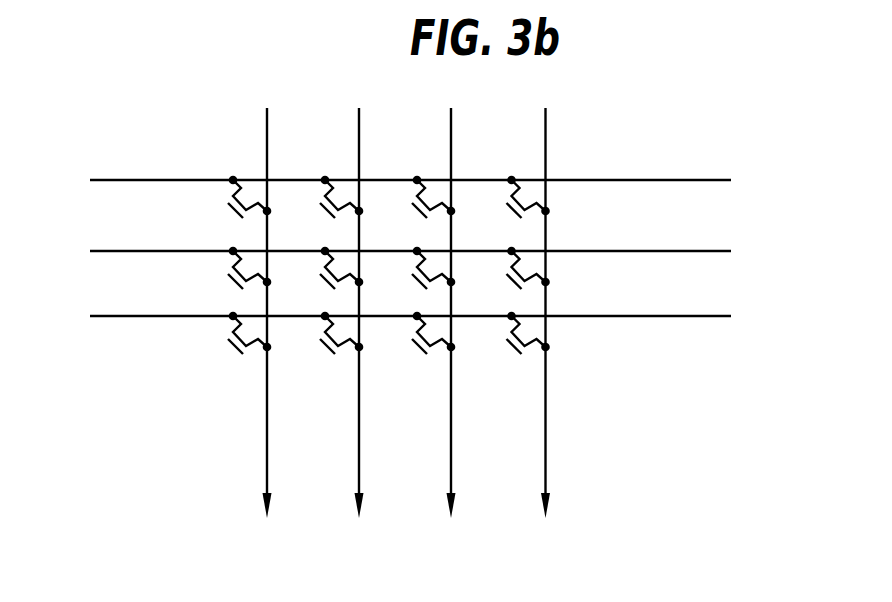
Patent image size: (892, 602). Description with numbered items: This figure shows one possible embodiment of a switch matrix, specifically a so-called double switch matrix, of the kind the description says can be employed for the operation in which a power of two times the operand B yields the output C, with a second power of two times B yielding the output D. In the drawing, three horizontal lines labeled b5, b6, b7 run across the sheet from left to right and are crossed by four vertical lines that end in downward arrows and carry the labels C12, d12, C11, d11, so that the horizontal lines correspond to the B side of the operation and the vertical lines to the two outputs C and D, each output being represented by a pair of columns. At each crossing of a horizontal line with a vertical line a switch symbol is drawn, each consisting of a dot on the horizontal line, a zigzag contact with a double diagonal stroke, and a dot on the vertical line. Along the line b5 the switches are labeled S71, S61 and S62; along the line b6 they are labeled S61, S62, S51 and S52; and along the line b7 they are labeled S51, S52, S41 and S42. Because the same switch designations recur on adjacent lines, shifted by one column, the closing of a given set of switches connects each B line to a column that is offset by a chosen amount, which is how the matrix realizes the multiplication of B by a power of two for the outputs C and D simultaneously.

The bit line b5 is at (392, 174).
The bit line b6 is at (392, 247).
The bit line b7 is at (392, 313).
The column output line C12 is at (265, 350).
The column output line d12 is at (357, 350).
The column output line C11 is at (447, 350).
The column output line d11 is at (538, 350).
The switch S71 is at (226, 207).
The switch S61 is at (296, 242).
The switch S62 is at (392, 242).
The switch S51 is at (318, 317).
The switch S52 is at (412, 317).
The switch S41 is at (409, 350).
The switch S42 is at (504, 350).